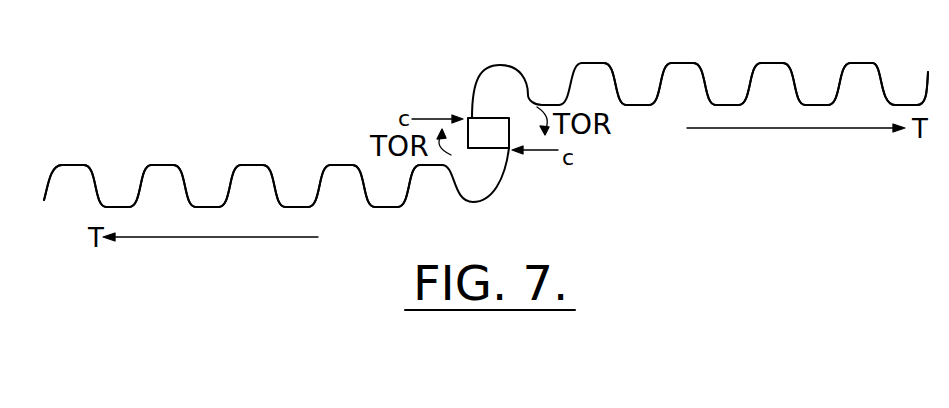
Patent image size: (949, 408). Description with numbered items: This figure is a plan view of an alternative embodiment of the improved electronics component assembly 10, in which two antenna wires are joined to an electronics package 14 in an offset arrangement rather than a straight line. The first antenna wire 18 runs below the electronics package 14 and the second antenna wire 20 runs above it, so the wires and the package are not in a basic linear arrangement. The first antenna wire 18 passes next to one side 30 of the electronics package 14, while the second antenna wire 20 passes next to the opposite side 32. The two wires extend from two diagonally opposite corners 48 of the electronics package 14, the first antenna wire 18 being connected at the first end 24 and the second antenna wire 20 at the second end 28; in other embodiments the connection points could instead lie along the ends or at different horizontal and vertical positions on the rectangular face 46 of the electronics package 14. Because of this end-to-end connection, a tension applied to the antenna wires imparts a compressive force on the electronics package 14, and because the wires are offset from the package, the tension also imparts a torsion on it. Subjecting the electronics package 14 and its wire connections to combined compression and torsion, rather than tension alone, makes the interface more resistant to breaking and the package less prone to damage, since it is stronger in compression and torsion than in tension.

The electronics component assembly 10 is at (281, 74).
The electronics package 14 is at (482, 118).
The first antenna wire 18 is at (261, 166).
The second antenna wire 20 is at (785, 63).
The first end 24 is at (509, 138).
The second end 28 is at (468, 148).
The side 30 is at (490, 148).
The side 32 is at (470, 118).
The rectangular face 46 is at (482, 146).
The corners 48 is at (467, 118).